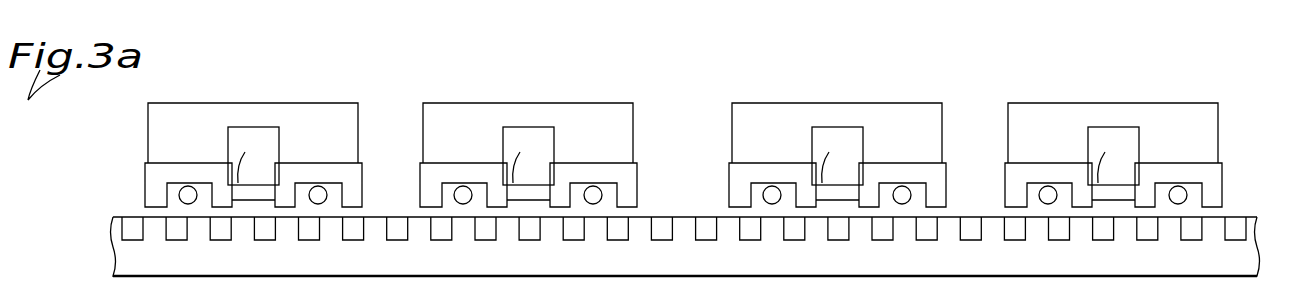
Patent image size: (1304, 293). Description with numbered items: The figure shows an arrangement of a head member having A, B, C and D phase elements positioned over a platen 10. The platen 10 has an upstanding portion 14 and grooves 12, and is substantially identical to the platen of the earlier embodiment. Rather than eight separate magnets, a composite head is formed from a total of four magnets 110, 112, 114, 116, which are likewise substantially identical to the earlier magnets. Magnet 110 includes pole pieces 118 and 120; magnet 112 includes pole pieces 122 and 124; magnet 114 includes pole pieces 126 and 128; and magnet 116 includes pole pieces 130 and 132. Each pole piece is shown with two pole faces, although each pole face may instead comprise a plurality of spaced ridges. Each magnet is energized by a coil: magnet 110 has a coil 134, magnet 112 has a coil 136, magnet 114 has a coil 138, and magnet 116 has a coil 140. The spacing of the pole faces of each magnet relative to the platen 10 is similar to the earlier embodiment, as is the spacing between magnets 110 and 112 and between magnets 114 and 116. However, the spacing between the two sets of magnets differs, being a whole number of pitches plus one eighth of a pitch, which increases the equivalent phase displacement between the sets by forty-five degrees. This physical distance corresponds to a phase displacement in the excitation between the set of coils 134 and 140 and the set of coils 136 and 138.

The platen 10 is at (147, 258).
The grooves 12 is at (708, 217).
The upstanding portion 14 is at (418, 222).
The magnet 110 is at (325, 110).
The magnet 112 is at (605, 113).
The magnet 114 is at (910, 112).
The magnet 116 is at (1193, 115).
The pole piece 118 is at (157, 170).
The pole piece 120 is at (353, 168).
The pole piece 122 is at (422, 170).
The pole piece 124 is at (633, 173).
The pole piece 126 is at (728, 173).
The pole piece 128 is at (945, 170).
The pole piece 130 is at (1013, 173).
The pole piece 132 is at (1210, 173).
The coil 134 is at (253, 163).
The coil 136 is at (528, 163).
The coil 138 is at (837, 163).
The coil 140 is at (1113, 163).